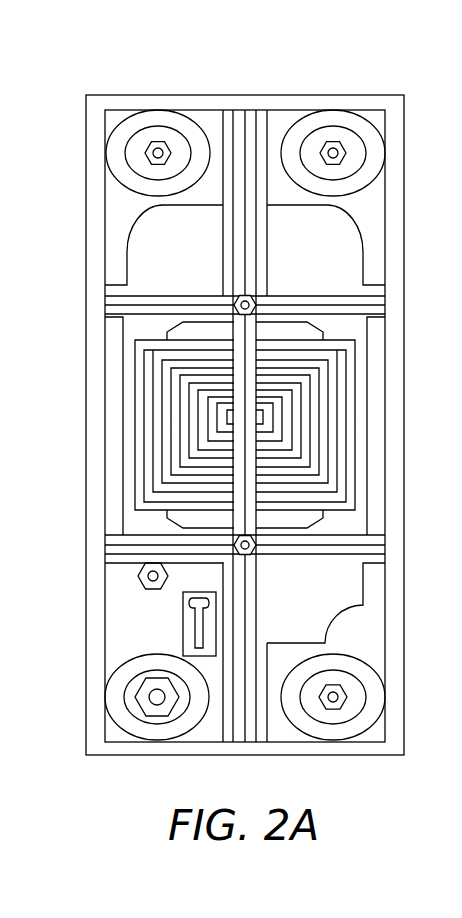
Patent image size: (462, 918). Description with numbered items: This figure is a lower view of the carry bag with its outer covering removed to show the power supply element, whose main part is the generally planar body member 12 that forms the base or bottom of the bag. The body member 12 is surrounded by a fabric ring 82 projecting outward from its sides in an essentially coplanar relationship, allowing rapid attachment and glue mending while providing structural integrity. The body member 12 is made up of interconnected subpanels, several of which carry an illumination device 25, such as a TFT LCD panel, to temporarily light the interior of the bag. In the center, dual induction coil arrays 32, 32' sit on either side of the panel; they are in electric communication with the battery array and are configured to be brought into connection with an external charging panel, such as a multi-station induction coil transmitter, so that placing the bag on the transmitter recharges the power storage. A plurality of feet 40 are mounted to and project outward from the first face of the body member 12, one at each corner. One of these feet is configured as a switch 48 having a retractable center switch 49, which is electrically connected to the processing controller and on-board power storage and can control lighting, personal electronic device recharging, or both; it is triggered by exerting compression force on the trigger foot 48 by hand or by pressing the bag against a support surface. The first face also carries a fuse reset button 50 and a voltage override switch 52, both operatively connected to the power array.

The body member 12 is at (350, 91).
The fabric ring 82 is at (222, 95).
The illumination device 25 is at (186, 262).
The induction coil array 32 is at (133, 425).
The induction coil array 32' is at (354, 425).
The feet 40 is at (146, 153).
The switch 48 is at (120, 697).
The retractable center switch 49 is at (142, 688).
The fuse reset button 50 is at (138, 576).
The voltage override switch 52 is at (183, 626).